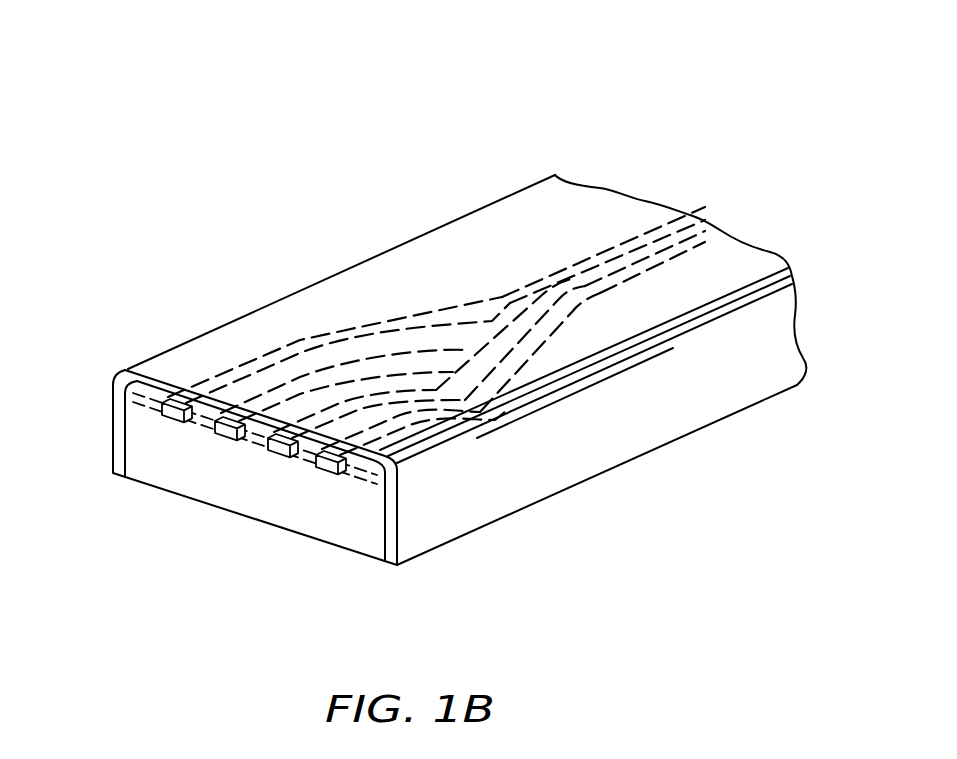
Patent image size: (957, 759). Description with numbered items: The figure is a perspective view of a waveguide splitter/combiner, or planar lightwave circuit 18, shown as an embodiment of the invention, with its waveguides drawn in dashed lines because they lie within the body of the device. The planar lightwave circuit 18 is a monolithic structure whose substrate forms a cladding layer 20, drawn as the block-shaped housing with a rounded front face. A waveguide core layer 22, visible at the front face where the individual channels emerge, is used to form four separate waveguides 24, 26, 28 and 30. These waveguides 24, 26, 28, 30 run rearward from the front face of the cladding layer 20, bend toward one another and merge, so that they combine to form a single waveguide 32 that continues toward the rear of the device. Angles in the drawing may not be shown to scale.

The planar lightwave circuit 18 is at (206, 160).
The cladding layer 20 is at (312, 521).
The waveguide core layer 22 is at (217, 430).
The waveguide 24 is at (238, 370).
The waveguide 26 is at (297, 385).
The waveguide 28 is at (368, 395).
The waveguide 30 is at (430, 402).
The single waveguide 32 is at (636, 243).